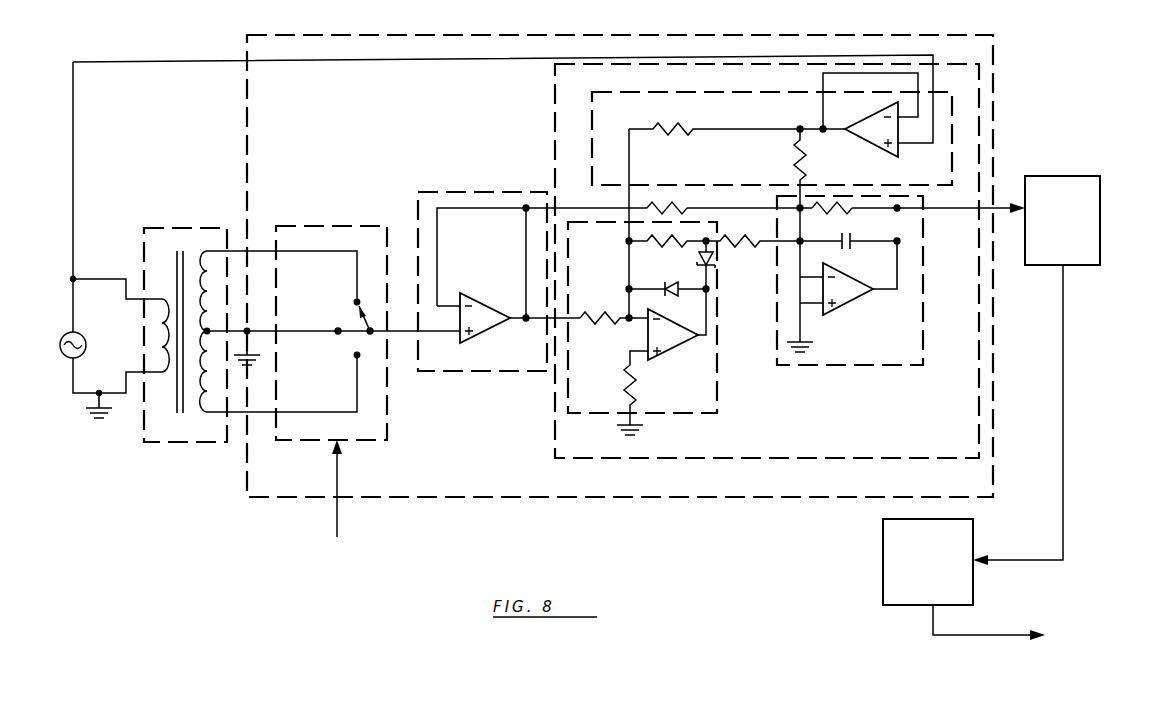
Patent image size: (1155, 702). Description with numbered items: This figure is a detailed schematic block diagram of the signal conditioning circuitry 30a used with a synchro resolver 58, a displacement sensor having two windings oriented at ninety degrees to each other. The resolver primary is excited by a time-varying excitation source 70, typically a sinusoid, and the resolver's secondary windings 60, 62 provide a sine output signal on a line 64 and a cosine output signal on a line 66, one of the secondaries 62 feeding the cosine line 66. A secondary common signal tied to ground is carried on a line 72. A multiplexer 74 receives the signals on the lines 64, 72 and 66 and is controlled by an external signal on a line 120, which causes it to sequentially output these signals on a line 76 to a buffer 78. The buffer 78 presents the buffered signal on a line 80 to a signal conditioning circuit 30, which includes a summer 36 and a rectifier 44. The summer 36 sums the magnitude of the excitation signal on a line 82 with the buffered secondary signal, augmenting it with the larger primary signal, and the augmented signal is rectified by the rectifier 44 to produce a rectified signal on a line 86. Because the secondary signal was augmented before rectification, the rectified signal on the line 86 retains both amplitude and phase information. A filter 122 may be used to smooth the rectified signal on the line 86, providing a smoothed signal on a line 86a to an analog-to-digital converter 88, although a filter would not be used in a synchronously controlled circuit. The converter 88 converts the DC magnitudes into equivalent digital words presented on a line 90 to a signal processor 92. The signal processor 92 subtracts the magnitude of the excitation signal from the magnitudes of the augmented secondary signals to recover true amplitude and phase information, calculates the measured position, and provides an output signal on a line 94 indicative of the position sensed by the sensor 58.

The signal conditioning circuit 30 is at (555, 100).
The signal conditioning circuitry 30a is at (993, 55).
The summer 36 is at (952, 112).
The rectifier 44 is at (717, 410).
The synchro resolver 58 is at (188, 442).
The secondary winding upper portion (sin) 60 is at (204, 300).
The secondary 62 is at (197, 392).
The line 64 is at (260, 250).
The line 66 is at (262, 414).
The excitation source 70 is at (85, 335).
The line 72 is at (293, 331).
The multiplexer 74 is at (345, 226).
The line 76 is at (410, 332).
The buffer 78 is at (475, 371).
The line 80 is at (532, 322).
The line 82 is at (190, 62).
The line 86 is at (712, 243).
The line 86a is at (1000, 205).
The analog-to-digital converter 88 is at (1100, 245).
The line 90 is at (1063, 400).
The signal processor 92 is at (883, 527).
The line 94 is at (985, 635).
The line 120 is at (338, 530).
The filter 122 is at (870, 365).